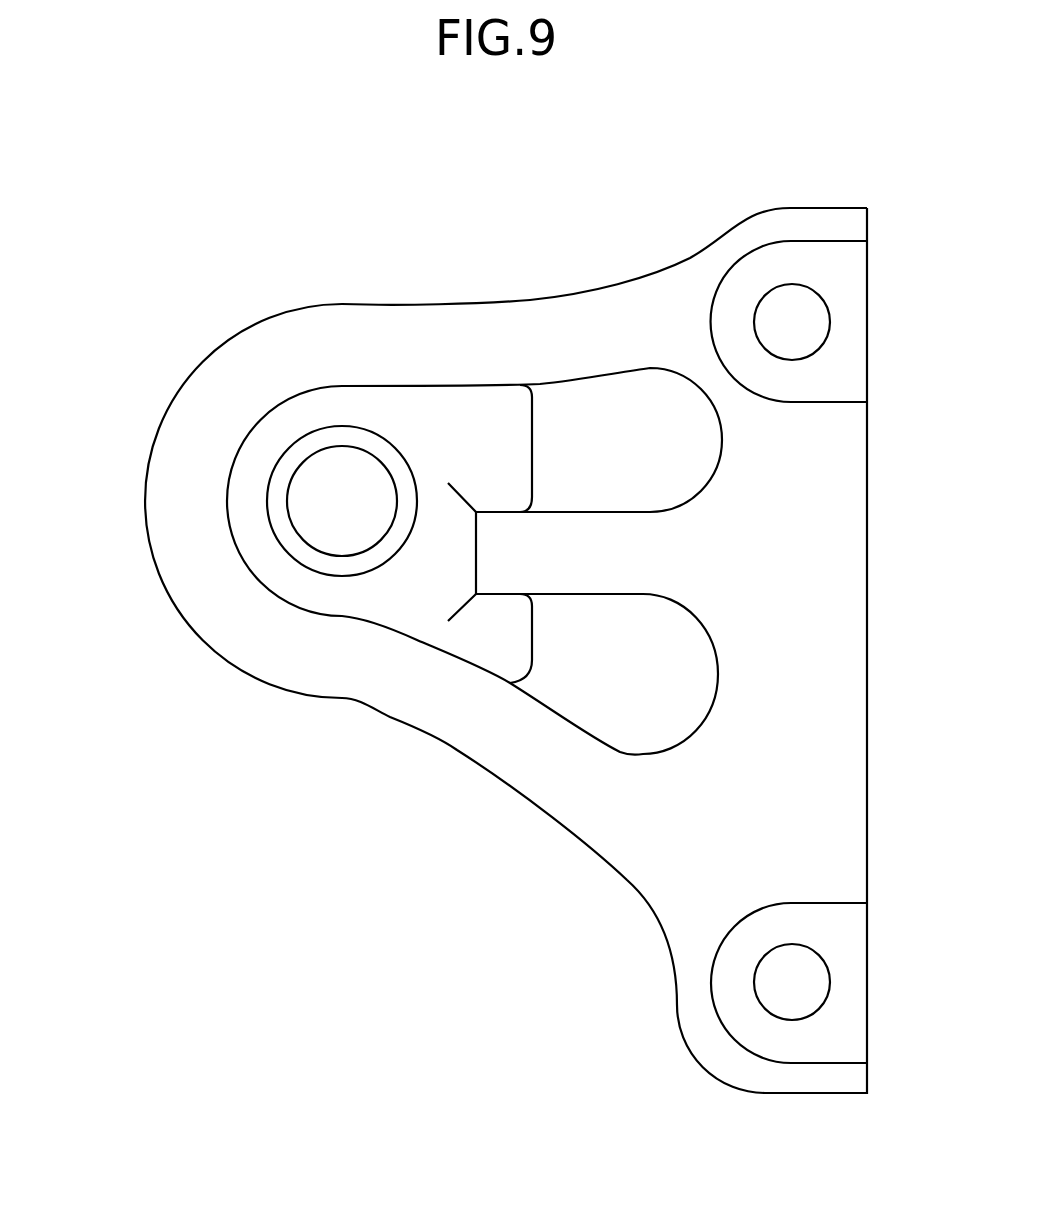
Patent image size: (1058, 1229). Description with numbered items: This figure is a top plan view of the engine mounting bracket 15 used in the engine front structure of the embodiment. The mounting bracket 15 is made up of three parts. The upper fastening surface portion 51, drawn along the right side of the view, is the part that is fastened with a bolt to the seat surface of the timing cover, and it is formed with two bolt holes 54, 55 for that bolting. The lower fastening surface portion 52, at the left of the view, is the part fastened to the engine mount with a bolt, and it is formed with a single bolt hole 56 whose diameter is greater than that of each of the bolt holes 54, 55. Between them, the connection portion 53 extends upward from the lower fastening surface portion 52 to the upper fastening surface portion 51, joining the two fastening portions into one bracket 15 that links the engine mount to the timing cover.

The mounting bracket 15 is at (350, 773).
The upper fastening surface portion 51 is at (848, 577).
The lower fastening surface portion 52 is at (168, 430).
The connection portion 53 is at (592, 817).
The bolt hole 54 is at (813, 973).
The bolt hole 55 is at (815, 305).
The bolt hole 56 is at (337, 467).